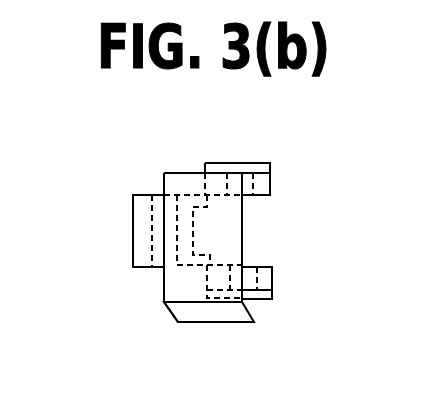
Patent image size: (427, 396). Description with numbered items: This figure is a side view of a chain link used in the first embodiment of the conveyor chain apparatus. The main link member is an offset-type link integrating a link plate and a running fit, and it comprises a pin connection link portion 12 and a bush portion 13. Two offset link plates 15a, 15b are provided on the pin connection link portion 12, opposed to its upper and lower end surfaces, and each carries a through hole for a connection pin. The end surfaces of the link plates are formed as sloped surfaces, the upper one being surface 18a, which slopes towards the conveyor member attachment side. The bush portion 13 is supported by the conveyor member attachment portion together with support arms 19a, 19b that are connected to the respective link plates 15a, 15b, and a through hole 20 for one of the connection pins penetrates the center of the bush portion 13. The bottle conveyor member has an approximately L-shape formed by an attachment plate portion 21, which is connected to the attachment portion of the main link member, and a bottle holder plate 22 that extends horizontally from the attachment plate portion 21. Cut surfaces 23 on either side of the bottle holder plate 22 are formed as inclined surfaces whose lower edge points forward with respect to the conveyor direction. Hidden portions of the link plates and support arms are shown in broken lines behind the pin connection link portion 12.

The pin connection link portion 12 is at (264, 168).
The bush portion 13 is at (142, 248).
The link plate 15a is at (271, 182).
The link plate 15b is at (272, 279).
The sloped surface 18a is at (233, 163).
The support arm 19a is at (210, 207).
The support arm 19b is at (213, 255).
The through hole 20 is at (148, 213).
The attachment plate portion 21 is at (190, 283).
The bottle holder plate 22 is at (211, 313).
The cut surface 23 is at (168, 312).